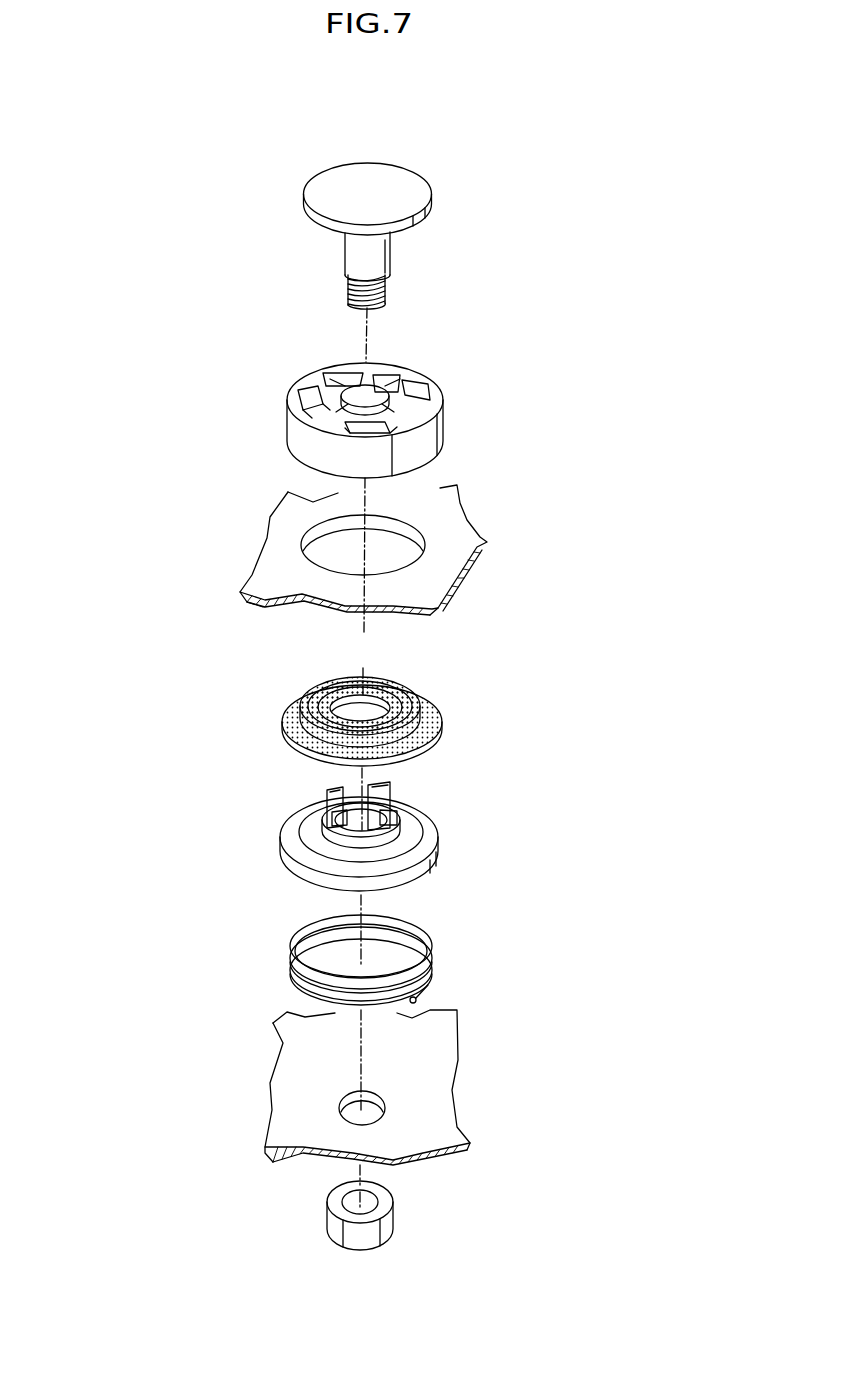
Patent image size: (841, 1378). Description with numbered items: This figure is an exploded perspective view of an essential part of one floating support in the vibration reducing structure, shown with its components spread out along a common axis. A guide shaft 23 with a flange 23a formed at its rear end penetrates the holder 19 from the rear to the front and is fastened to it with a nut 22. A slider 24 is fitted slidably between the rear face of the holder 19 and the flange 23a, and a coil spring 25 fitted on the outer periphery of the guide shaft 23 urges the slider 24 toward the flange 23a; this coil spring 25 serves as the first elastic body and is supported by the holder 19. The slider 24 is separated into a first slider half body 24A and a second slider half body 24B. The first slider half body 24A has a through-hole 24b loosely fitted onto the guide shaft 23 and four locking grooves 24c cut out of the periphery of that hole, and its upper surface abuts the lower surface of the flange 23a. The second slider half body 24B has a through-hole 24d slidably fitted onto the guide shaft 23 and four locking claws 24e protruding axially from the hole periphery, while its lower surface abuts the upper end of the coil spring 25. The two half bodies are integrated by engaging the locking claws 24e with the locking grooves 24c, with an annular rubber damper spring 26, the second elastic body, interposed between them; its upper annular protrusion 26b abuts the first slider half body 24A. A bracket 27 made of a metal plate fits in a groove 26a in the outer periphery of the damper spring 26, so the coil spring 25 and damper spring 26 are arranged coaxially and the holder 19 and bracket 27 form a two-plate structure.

The holder 19 is at (293, 1077).
The nut 22 is at (383, 1228).
The guide shaft 23 is at (356, 224).
The flange 23a is at (388, 183).
The slider 24 is at (433, 373).
The first slider half body 24A is at (305, 428).
The second slider half body 24B is at (305, 749).
The through-hole 24b is at (358, 395).
The locking grooves 24c is at (342, 383).
The through-hole 24d is at (367, 818).
The locking claws 24e is at (330, 790).
The coil spring 25 is at (292, 947).
The damper spring 26 is at (399, 692).
The groove 26a is at (438, 732).
The annular protrusion 26b is at (383, 682).
The bracket 27 is at (453, 528).